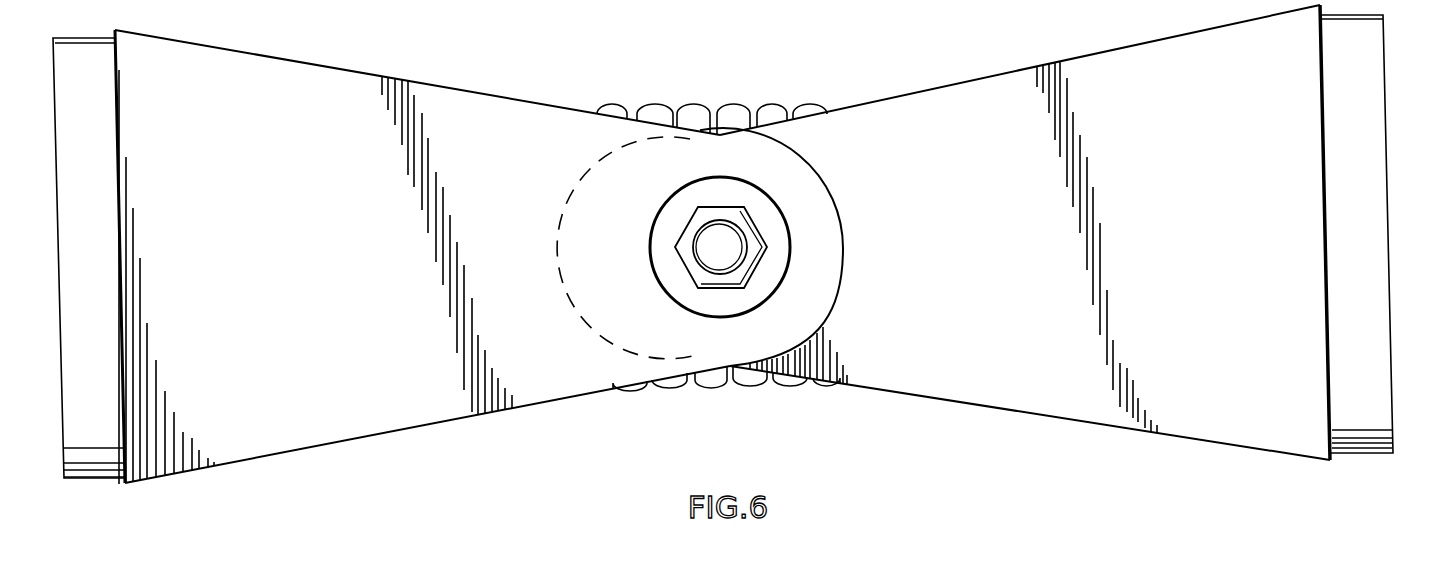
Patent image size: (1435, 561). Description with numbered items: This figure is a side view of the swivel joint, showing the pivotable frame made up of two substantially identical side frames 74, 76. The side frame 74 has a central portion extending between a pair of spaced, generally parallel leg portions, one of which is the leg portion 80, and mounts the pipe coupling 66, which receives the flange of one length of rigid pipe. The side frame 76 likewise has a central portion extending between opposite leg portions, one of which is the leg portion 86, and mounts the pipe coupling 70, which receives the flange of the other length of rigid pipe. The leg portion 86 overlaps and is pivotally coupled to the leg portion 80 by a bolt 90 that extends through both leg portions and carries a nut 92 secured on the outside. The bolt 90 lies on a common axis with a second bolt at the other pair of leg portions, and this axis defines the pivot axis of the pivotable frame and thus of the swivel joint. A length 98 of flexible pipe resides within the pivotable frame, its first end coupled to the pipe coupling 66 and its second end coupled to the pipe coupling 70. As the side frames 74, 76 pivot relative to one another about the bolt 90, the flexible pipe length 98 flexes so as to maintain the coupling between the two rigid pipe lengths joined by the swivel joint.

The pipe coupling 66 is at (68, 53).
The pipe coupling 70 is at (1382, 104).
The side frame 74 is at (403, 429).
The side frame 76 is at (1205, 444).
The leg portion 80 is at (489, 104).
The leg portion 86 is at (1127, 52).
The bolt 90 is at (712, 258).
The nut 92 is at (700, 277).
The length of flexible pipe 98 is at (747, 392).